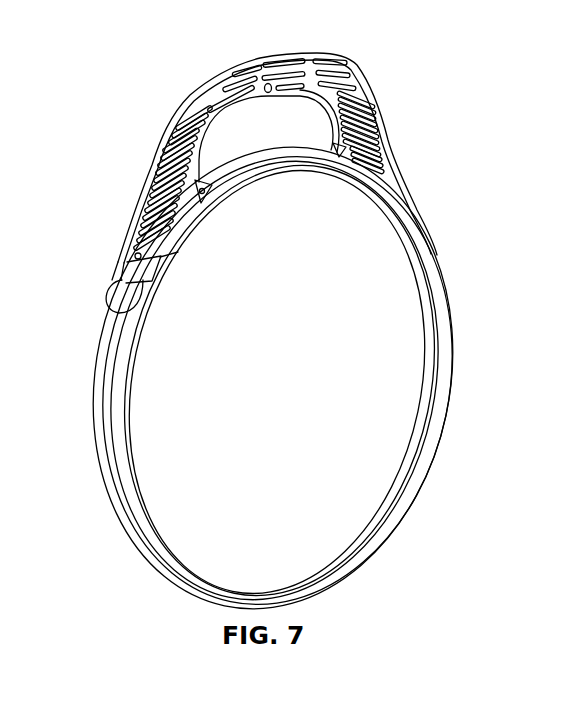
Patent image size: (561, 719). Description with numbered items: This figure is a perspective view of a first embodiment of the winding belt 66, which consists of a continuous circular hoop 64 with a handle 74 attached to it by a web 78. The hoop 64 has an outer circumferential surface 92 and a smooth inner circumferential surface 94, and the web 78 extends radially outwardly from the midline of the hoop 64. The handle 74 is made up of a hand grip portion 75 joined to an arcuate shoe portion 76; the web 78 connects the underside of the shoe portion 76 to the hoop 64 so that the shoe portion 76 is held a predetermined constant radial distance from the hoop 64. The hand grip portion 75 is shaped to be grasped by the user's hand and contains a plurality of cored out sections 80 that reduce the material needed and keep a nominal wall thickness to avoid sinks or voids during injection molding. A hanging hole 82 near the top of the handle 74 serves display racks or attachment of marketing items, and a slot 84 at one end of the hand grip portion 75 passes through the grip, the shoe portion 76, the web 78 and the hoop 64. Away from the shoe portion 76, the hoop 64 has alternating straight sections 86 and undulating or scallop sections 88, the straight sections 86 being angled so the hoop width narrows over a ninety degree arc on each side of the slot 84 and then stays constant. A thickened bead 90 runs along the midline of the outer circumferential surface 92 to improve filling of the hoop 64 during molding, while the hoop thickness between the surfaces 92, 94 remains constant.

The continuous circular hoop 64 is at (278, 377).
The winding belt 66 is at (237, 160).
The handle 74 is at (209, 92).
The hand grip portion 75 is at (357, 79).
The arcuate shoe portion 76 is at (117, 297).
The web 78 is at (312, 159).
The cored out sections 80 is at (368, 108).
The hanging hole 82 is at (270, 83).
The slot 84 is at (170, 256).
The straight sections 86 is at (452, 306).
The undulating or scallop sections 88 is at (452, 335).
The thickened bead 90 is at (127, 526).
The outer circumferential surface 92 is at (102, 477).
The smooth inner circumferential surface 94 is at (398, 497).